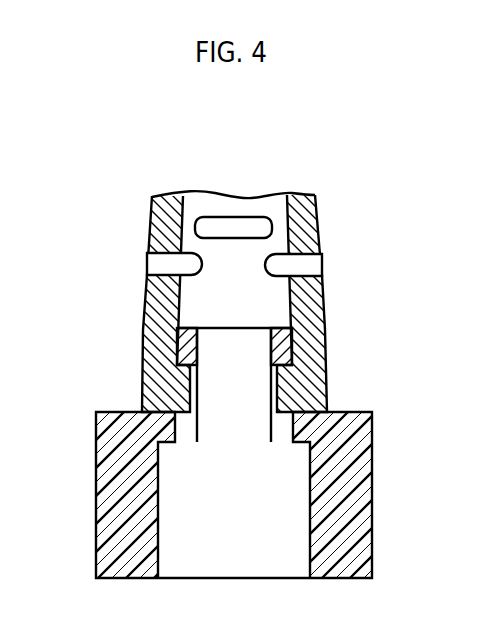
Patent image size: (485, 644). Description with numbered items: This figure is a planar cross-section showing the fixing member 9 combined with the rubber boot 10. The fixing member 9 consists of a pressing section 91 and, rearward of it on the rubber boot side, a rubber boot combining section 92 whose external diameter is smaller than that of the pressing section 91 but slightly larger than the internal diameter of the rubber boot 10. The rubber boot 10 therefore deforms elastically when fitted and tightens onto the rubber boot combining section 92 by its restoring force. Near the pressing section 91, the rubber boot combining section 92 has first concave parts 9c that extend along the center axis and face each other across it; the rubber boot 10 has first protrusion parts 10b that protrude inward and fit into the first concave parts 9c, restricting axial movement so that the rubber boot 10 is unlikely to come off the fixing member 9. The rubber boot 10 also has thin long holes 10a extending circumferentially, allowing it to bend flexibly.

The fixing member 9 is at (242, 453).
The first concave parts 9c is at (278, 380).
The rubber boot 10 is at (320, 302).
The thin long holes 10a is at (245, 218).
The first protrusion parts 10b is at (278, 402).
The pressing section 91 is at (108, 438).
The rubber boot combining section 92 is at (187, 349).